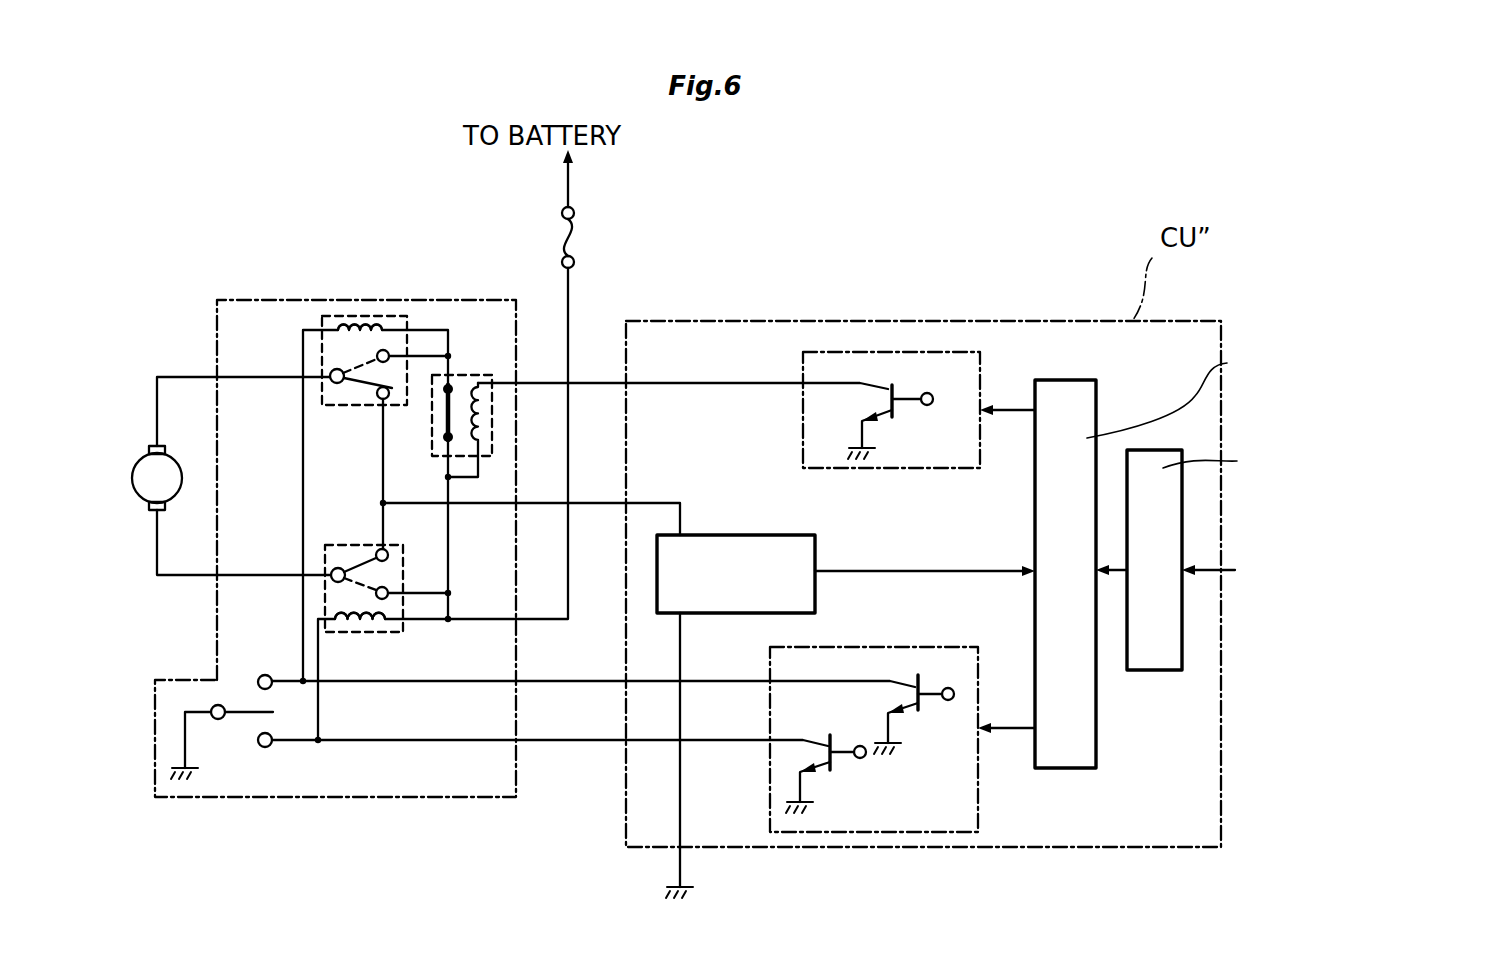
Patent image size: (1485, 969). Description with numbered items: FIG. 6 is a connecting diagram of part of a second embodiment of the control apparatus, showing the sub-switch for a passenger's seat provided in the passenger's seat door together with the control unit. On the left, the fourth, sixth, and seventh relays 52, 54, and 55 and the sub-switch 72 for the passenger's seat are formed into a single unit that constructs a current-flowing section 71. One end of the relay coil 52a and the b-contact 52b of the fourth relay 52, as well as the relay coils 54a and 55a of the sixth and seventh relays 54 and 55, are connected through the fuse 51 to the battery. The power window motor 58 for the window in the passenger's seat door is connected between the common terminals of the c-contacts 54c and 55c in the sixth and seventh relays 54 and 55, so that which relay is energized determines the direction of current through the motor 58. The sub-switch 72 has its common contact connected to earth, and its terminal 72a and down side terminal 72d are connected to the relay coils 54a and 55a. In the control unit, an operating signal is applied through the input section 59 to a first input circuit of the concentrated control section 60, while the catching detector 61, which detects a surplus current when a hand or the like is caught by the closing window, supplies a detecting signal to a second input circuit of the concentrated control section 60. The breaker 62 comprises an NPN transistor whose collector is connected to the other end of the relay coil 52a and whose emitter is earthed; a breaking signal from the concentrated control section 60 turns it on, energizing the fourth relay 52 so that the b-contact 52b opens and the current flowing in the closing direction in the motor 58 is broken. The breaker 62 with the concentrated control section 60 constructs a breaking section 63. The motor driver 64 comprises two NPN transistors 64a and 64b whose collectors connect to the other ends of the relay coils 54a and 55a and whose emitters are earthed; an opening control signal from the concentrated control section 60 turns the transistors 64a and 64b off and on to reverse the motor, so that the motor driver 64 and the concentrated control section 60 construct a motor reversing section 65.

The fuse 51 is at (577, 240).
The fourth relay 52 is at (466, 362).
The relay coil 52a is at (492, 412).
The b-contact 52b is at (428, 427).
The sixth relay 54 is at (305, 342).
The relay coil 54a is at (360, 325).
The c-contact 54c is at (347, 383).
The seventh relay 55 is at (410, 587).
The relay coil 55a is at (358, 627).
The c-contact 55c is at (357, 560).
The power window motor 58 is at (140, 462).
The input section 59 is at (1155, 672).
The concentrated control section 60 is at (1096, 408).
The catching detector 61 is at (738, 535).
The breaker 62 is at (925, 470).
The breaking section 63 is at (993, 376).
The motor driver 64 is at (850, 647).
The NPN transistor 64a is at (907, 713).
The NPN transistor 64b is at (838, 767).
The motor reversing section 65 is at (996, 772).
The current-flowing section 71 is at (312, 800).
The sub-switch 72 is at (241, 728).
The switch contact 72a is at (265, 672).
The down side terminal 72d is at (271, 746).